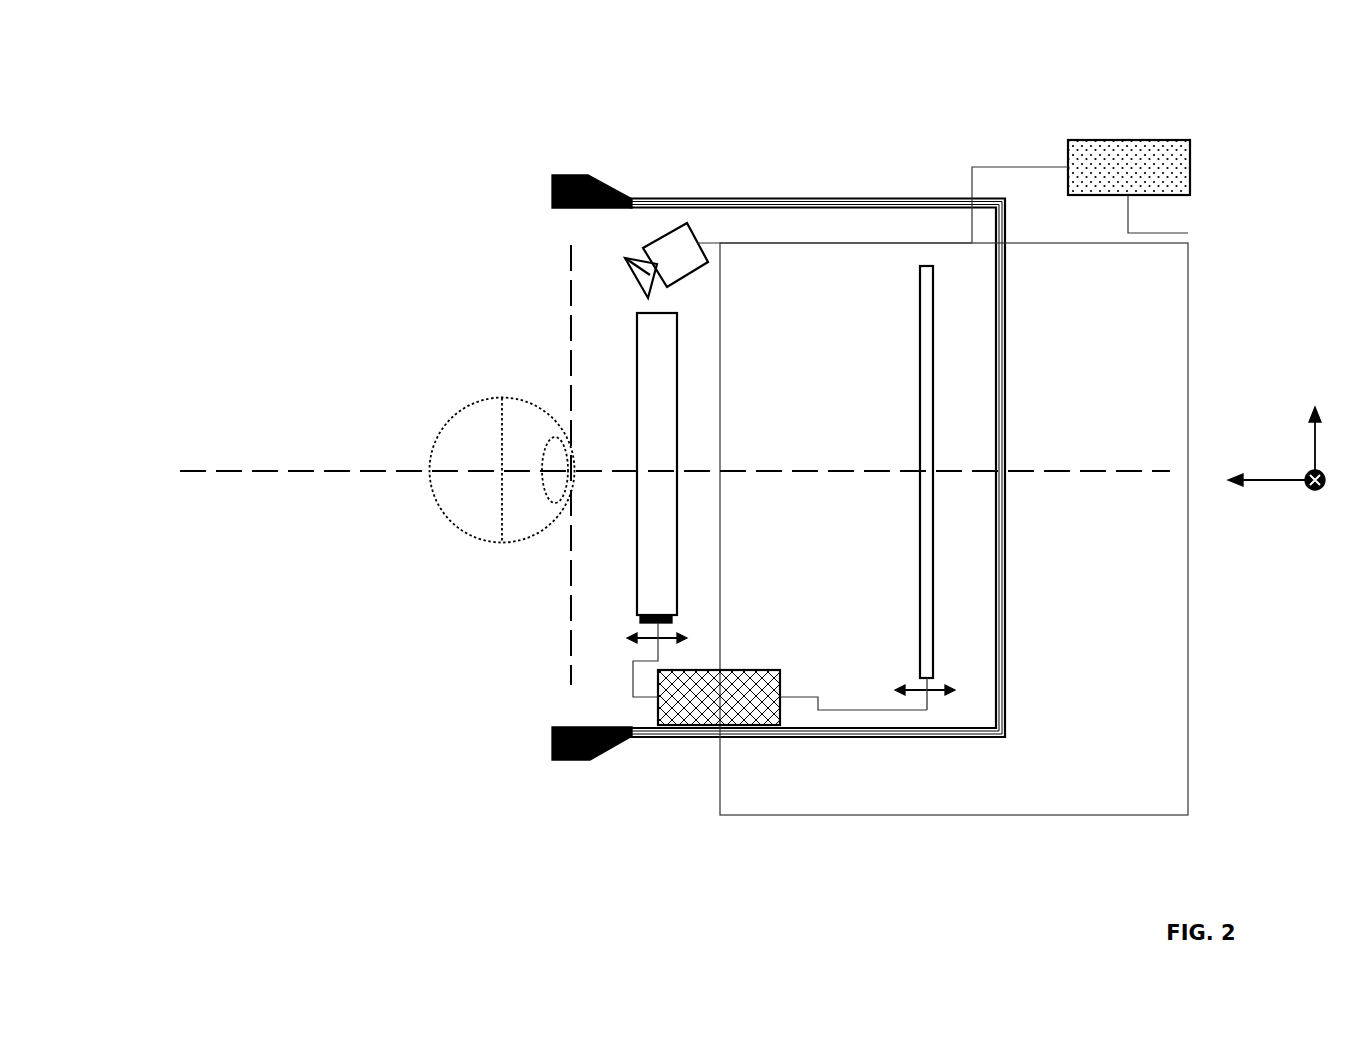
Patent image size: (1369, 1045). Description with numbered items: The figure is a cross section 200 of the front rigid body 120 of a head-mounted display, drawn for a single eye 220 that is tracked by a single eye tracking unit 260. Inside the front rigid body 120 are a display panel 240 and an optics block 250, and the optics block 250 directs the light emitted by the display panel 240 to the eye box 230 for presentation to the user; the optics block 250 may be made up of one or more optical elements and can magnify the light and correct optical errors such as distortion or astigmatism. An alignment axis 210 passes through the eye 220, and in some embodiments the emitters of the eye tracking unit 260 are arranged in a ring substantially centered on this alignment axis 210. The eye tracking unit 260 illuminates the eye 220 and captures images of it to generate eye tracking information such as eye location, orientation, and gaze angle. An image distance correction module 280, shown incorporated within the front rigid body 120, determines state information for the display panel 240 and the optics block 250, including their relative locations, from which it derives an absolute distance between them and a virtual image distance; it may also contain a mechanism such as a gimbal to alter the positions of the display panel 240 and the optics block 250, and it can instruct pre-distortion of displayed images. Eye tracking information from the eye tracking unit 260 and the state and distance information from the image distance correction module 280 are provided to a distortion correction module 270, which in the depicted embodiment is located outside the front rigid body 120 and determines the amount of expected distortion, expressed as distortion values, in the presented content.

The cross section 200 is at (734, 489).
The front rigid body 120 is at (937, 198).
The alignment axis 210 is at (265, 472).
The eye 220 is at (468, 407).
The eye box 230 is at (552, 537).
The display panel 240 is at (933, 388).
The optics block 250 is at (637, 330).
The eye tracking unit 260 is at (664, 245).
The distortion correction module 270 is at (1130, 140).
The image distance correction module 280 is at (688, 723).